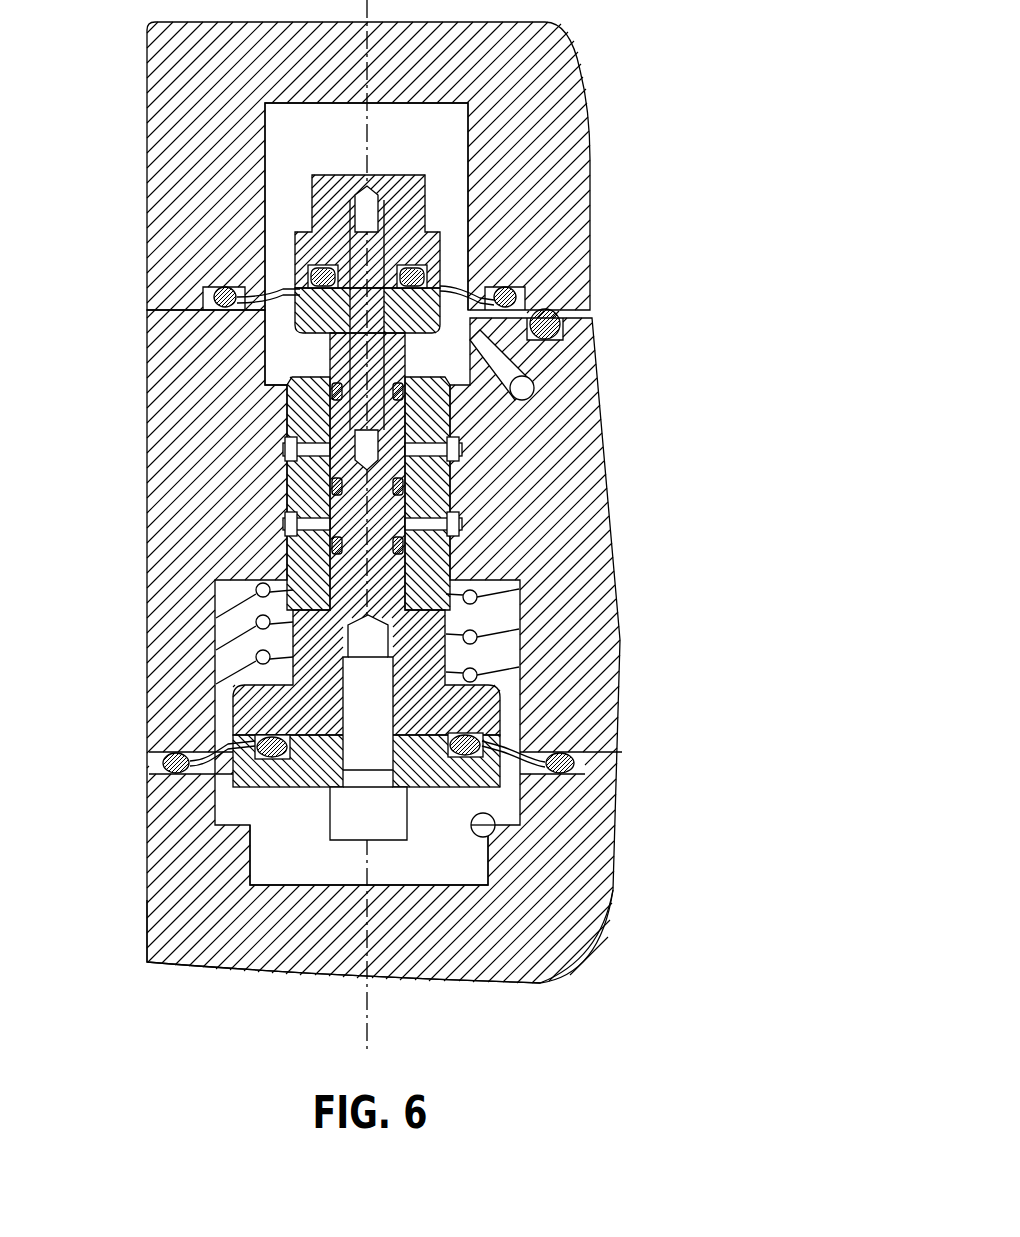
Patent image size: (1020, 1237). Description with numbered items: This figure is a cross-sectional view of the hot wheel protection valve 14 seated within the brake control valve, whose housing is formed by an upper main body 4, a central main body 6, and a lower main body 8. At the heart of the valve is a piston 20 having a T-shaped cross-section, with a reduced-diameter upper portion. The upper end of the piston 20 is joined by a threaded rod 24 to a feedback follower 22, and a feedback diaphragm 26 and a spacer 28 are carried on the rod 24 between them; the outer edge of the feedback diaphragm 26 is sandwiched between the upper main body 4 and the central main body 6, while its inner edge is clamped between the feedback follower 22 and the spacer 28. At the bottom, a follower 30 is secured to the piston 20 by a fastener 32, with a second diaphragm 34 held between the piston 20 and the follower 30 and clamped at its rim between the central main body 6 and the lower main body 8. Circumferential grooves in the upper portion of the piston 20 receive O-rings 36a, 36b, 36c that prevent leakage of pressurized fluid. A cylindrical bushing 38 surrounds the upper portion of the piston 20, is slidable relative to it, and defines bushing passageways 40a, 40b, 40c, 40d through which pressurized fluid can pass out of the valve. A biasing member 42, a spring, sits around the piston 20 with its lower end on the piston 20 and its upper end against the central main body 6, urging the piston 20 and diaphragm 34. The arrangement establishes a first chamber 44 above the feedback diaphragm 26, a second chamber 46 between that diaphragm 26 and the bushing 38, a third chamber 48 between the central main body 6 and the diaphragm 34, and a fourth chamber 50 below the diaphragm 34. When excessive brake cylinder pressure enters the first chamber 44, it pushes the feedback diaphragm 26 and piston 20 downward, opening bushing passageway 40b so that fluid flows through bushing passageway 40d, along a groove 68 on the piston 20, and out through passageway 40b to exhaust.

The upper main body 4 is at (562, 70).
The central main body 6 is at (593, 638).
The lower main body 8 is at (600, 860).
The hot wheel protection valve 14 is at (233, 493).
The piston 20 is at (250, 722).
The feedback follower 22 is at (403, 208).
The rod 24 is at (377, 260).
The feedback diaphragm 26 is at (222, 296).
The spacer 28 is at (303, 322).
The follower 30 is at (272, 778).
The fastener 32 is at (343, 822).
The diaphragm 34 is at (577, 775).
The O-ring 36a is at (485, 372).
The O-ring 36b is at (450, 500).
The O-ring 36c is at (410, 540).
The bushing 38 is at (300, 590).
The bushing passageway 40a is at (453, 445).
The bushing passageway 40b is at (453, 525).
The bushing passageway 40c is at (287, 530).
The bushing passageway 40d is at (287, 449).
The biasing member 42 is at (300, 658).
The first chamber 44 is at (417, 146).
The second chamber 46 is at (274, 366).
The third chamber 48 is at (481, 674).
The fourth chamber 50 is at (427, 873).
The groove 68 is at (453, 400).